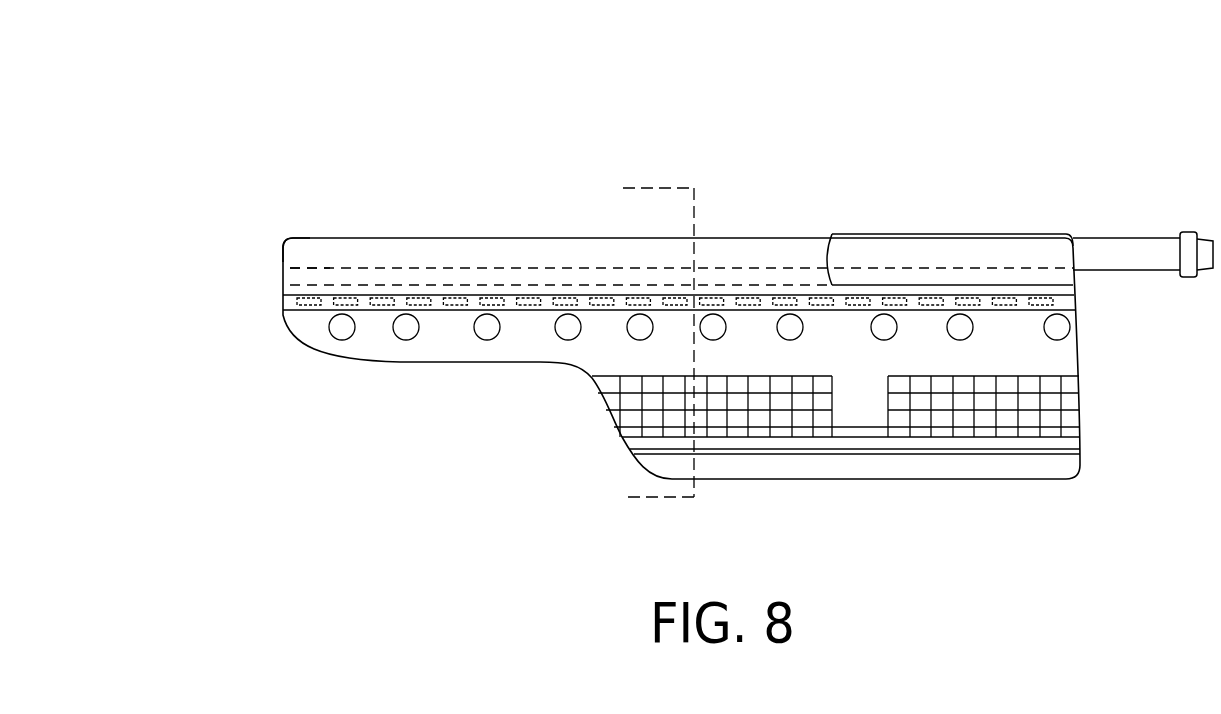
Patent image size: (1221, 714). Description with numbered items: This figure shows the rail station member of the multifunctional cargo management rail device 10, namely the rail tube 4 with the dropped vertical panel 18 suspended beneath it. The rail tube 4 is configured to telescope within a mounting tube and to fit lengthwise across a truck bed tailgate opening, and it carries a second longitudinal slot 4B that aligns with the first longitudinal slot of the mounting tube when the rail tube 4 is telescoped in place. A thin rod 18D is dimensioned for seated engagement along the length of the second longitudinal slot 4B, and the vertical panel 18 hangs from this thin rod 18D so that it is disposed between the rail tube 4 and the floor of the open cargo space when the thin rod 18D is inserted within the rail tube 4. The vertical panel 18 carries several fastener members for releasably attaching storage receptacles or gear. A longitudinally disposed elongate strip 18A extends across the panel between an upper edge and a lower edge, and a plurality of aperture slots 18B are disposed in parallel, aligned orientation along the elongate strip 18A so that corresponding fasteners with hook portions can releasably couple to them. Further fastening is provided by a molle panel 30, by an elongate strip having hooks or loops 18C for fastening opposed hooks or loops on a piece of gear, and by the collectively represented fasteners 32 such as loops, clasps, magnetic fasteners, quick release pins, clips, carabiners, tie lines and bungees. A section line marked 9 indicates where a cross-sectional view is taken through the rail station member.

The multifunctional cargo management rail device 10 is at (390, 205).
The rail tube 4 is at (730, 253).
The second longitudinal slot 4B is at (302, 268).
The dropped vertical panel 18 is at (880, 398).
The elongate strip 18A is at (312, 317).
The aperture slots 18B is at (1012, 305).
The hooks or loops 18C is at (1062, 445).
The thin rod 18D is at (260, 252).
The molle panel 30 is at (992, 418).
The fasteners 32 is at (712, 330).
The section line 9- 9 is at (628, 342).